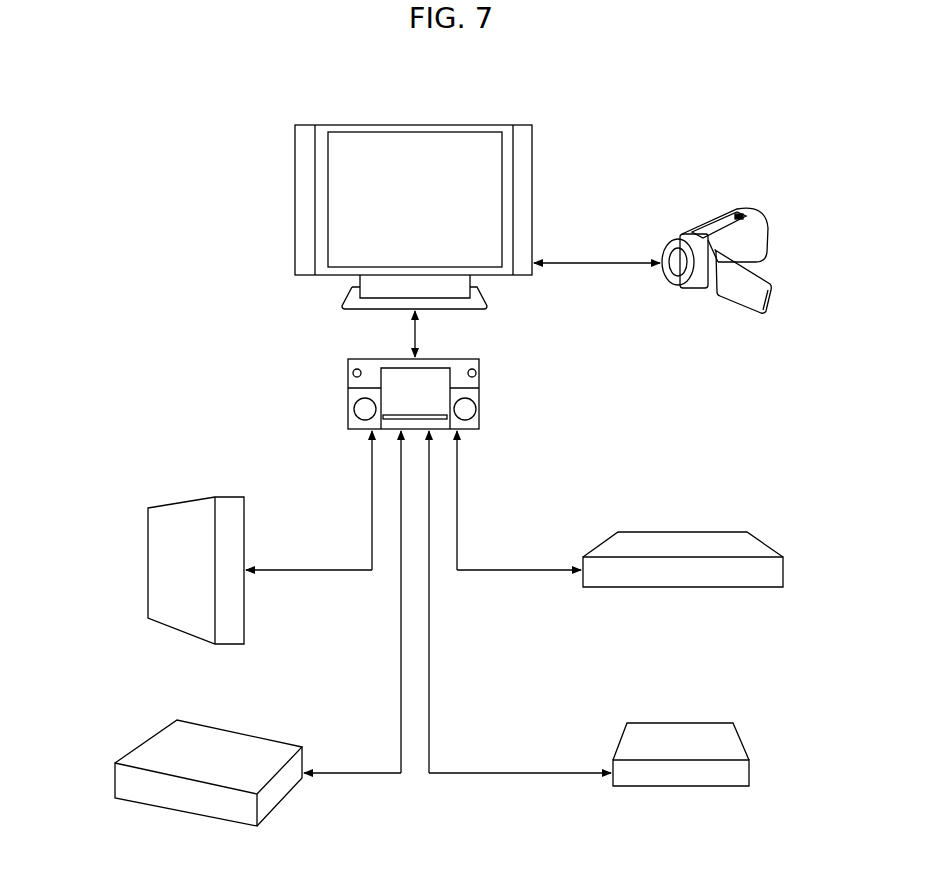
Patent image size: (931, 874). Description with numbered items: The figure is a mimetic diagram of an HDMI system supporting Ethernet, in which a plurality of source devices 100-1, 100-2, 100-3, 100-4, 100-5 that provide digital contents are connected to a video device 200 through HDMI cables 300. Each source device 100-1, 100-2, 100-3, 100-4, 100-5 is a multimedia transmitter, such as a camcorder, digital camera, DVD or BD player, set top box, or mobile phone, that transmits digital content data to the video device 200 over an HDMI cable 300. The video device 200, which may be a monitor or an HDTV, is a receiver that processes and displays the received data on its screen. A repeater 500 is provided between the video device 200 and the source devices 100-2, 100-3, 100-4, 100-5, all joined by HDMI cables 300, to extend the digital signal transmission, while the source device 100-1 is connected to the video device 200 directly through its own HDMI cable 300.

The video device 200 is at (414, 124).
The HDMI cable 300 is at (418, 333).
The repeater 500 is at (482, 375).
The source device 100-1 is at (755, 236).
The source device 100-2 is at (775, 572).
The source device 100-3 is at (740, 773).
The source device 100-4 is at (158, 568).
The source device 100-5 is at (125, 781).